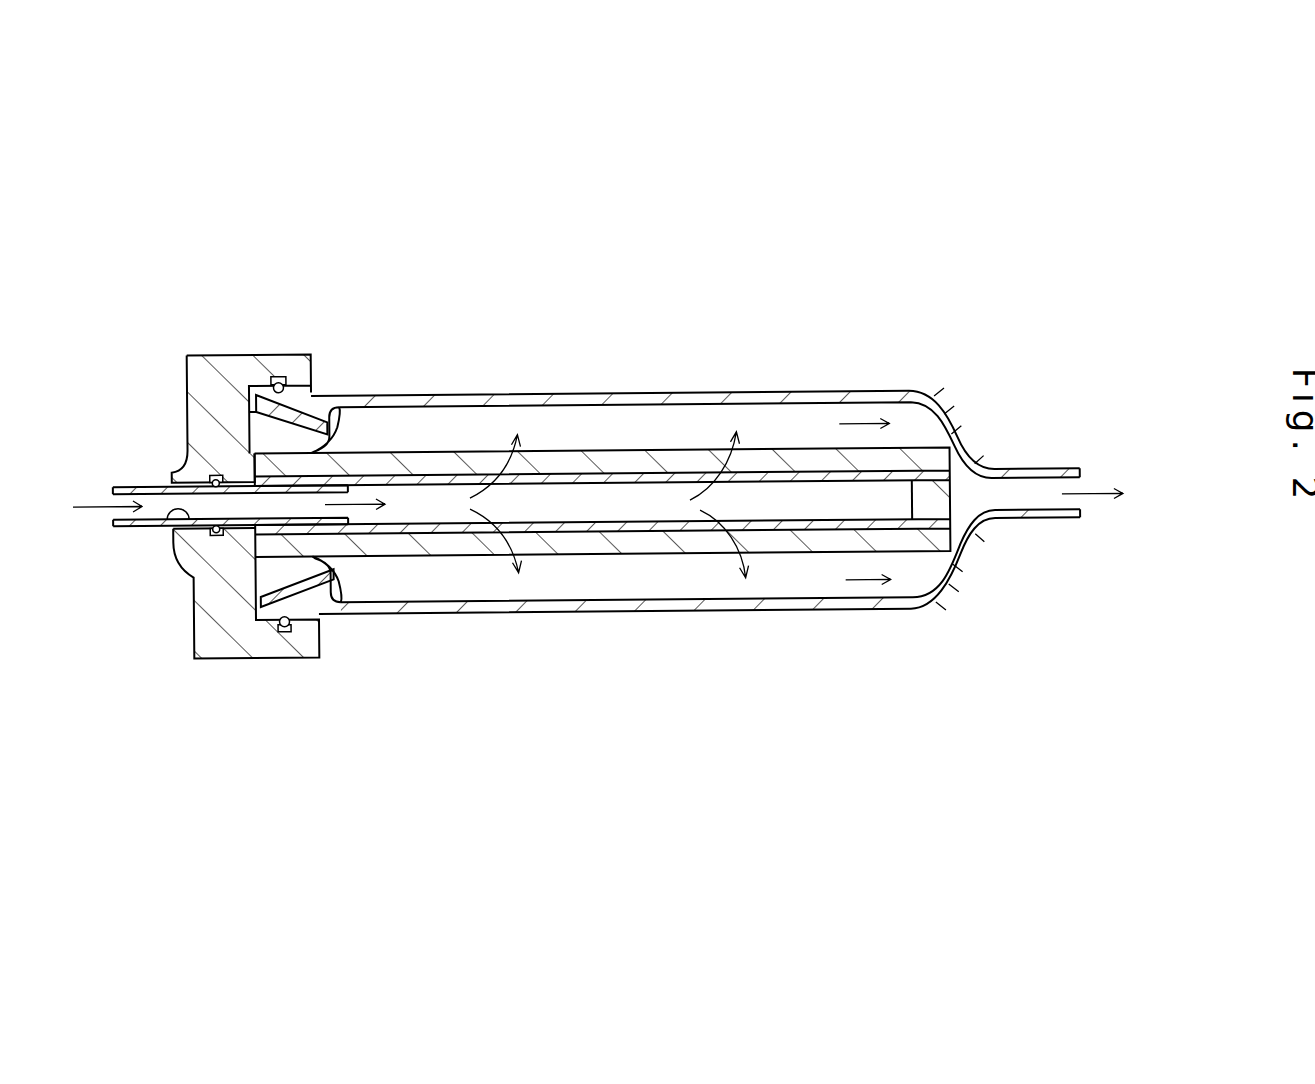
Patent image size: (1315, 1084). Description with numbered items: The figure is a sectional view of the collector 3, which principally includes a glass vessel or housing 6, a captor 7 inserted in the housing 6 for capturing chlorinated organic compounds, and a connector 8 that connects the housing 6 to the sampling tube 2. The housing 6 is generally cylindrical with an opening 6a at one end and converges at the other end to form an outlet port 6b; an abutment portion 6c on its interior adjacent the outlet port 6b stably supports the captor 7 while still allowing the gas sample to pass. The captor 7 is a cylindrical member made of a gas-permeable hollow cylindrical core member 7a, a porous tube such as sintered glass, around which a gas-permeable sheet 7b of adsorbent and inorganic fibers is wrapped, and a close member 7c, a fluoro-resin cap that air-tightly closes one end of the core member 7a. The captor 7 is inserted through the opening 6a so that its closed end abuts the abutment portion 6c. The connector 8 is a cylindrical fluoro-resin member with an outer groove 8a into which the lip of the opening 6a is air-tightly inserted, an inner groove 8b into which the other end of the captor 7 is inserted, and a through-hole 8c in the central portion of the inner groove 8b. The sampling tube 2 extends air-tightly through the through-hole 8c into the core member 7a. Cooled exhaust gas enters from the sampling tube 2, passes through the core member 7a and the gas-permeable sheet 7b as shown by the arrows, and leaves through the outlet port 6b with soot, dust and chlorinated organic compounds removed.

The sampling tube 2 is at (138, 486).
The collector 3 is at (612, 361).
The housing 6 is at (825, 397).
The opening 6a is at (318, 440).
The outlet port 6b is at (1045, 512).
The abutment portion 6c is at (962, 466).
The captor 7 is at (602, 499).
The core member 7a is at (575, 533).
The gas-permeable sheet 7b is at (818, 550).
The close member 7c is at (925, 490).
The connector 8 is at (207, 372).
The outer groove 8a is at (318, 392).
The inner groove 8b is at (270, 548).
The through-hole 8c is at (160, 528).